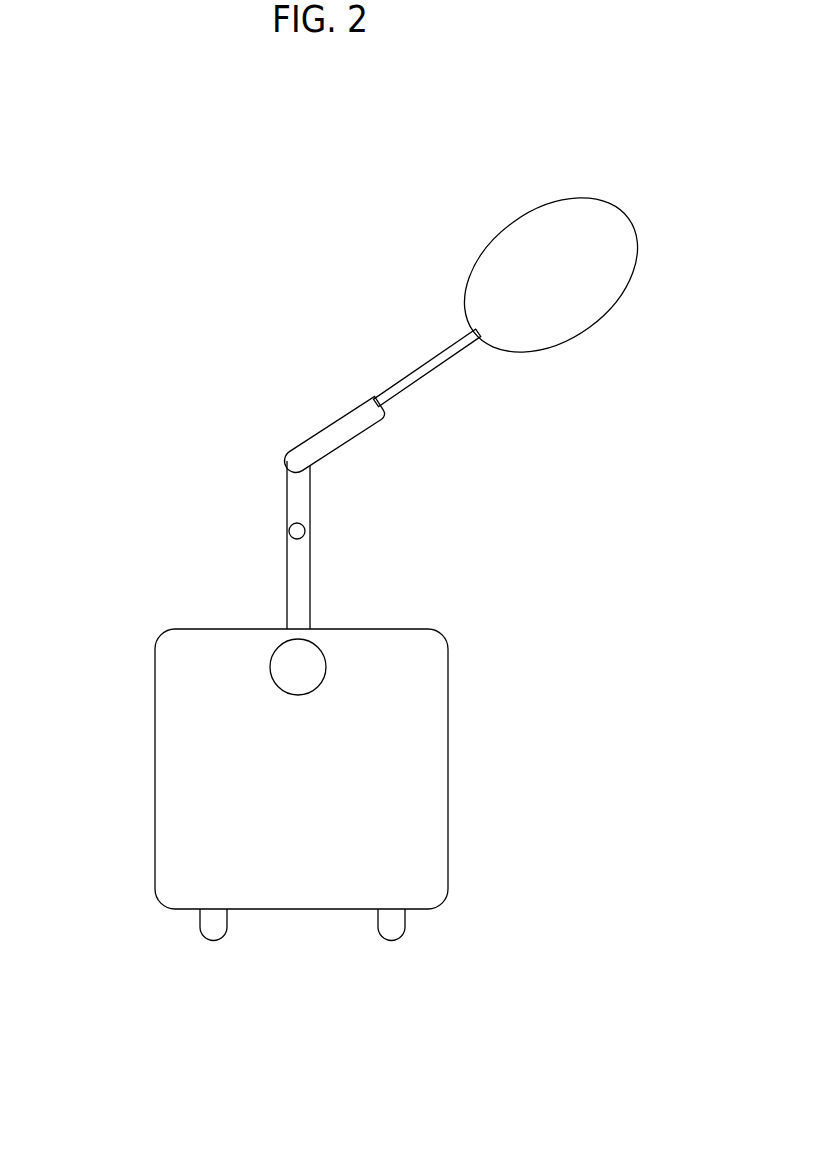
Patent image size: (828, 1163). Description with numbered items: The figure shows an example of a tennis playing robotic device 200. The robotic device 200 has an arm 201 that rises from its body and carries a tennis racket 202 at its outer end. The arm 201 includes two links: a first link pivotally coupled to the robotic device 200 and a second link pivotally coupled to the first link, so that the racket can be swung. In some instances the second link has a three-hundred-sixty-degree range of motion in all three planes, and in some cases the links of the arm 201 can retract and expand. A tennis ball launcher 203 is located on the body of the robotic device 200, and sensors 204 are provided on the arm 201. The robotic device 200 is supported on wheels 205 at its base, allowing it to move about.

The tennis playing robotic device 200 is at (153, 735).
The arm 201 is at (287, 500).
The tennis racket 202 is at (592, 327).
The tennis ball launcher 203 is at (277, 685).
The sensors 204 is at (292, 538).
The wheels 205 is at (215, 938).